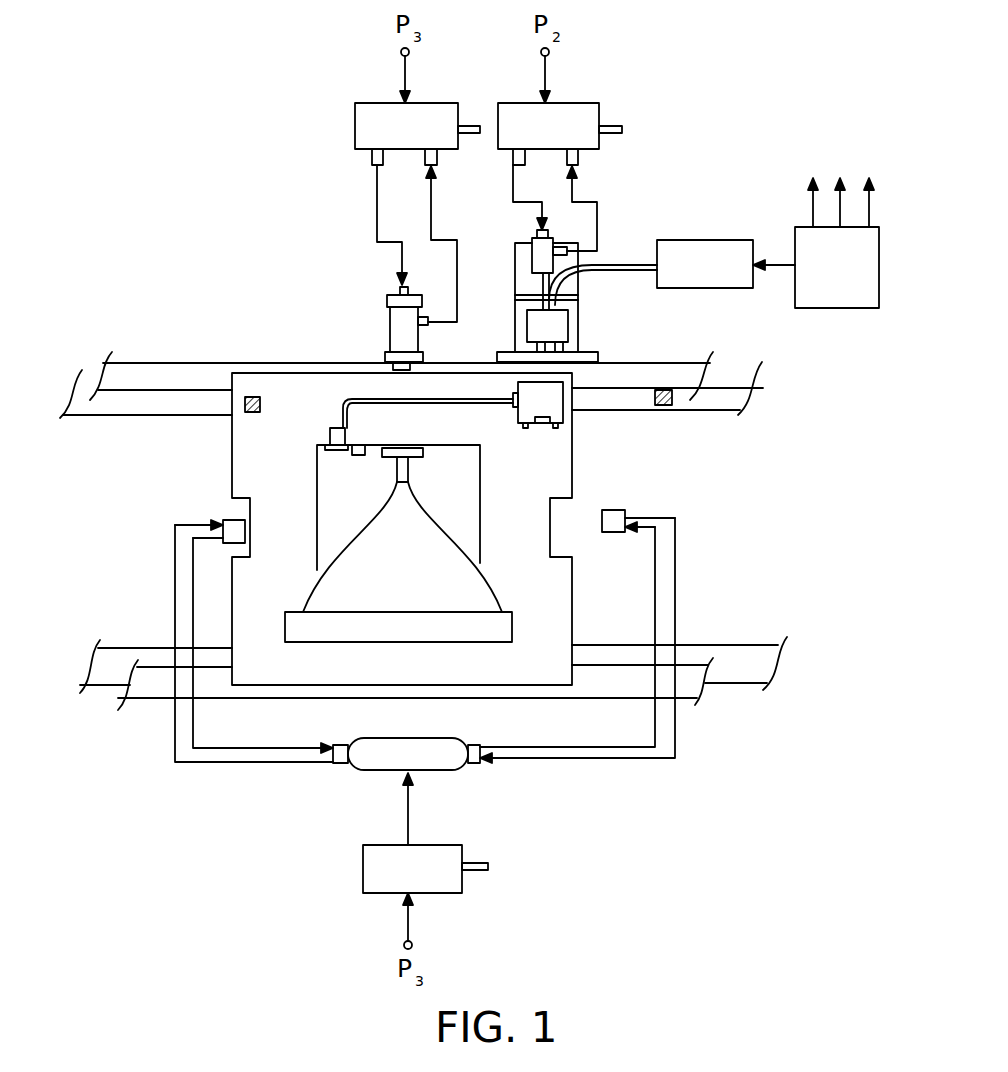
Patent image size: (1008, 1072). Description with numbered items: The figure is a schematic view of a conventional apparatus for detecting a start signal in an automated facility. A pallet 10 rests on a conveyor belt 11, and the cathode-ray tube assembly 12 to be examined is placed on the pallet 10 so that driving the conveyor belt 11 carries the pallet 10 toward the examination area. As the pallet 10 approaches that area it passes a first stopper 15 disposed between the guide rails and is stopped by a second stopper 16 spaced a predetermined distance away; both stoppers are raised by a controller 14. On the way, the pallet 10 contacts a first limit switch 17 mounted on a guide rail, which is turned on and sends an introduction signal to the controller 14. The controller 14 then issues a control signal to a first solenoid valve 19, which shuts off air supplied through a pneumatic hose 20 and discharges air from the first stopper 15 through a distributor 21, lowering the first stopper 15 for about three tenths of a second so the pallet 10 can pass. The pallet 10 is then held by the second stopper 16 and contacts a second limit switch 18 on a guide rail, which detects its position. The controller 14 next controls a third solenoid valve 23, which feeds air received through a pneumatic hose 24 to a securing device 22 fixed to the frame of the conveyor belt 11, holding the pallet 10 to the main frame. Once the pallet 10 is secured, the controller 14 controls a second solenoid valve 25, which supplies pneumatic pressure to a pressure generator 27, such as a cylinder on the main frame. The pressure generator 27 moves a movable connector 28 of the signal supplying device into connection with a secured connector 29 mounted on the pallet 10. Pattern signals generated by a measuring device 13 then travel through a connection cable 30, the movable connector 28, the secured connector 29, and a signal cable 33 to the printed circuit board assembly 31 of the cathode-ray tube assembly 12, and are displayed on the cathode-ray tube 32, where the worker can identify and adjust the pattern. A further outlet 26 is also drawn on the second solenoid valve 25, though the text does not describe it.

The pallet 10 is at (238, 465).
The conveyor belt 11 is at (135, 378).
The cathode-ray tube assembly 12 is at (497, 540).
The measuring device 13 is at (690, 247).
The controller 14 is at (867, 250).
The first stopper 15 is at (612, 510).
The second stopper 16 is at (222, 525).
The first limit switch 17 is at (663, 407).
The second limit switch 18 is at (252, 397).
The first solenoid valve 19 is at (378, 880).
The pneumatic hose 20 is at (475, 865).
The distributor 21 is at (372, 762).
The securing device 22 is at (398, 320).
The third solenoid valve 23 is at (433, 112).
The pneumatic hose 24 is at (470, 126).
The second solenoid valve 25 is at (577, 112).
The outlet 26 is at (618, 126).
The pressure generator 27 is at (540, 263).
The movable connector 28 is at (560, 322).
The secured connector 29 is at (531, 413).
The connection cable 30 is at (618, 262).
The printed circuit board assembly 31 is at (345, 490).
The cathode-ray tube 32 is at (347, 577).
The signal cable 33 is at (352, 398).